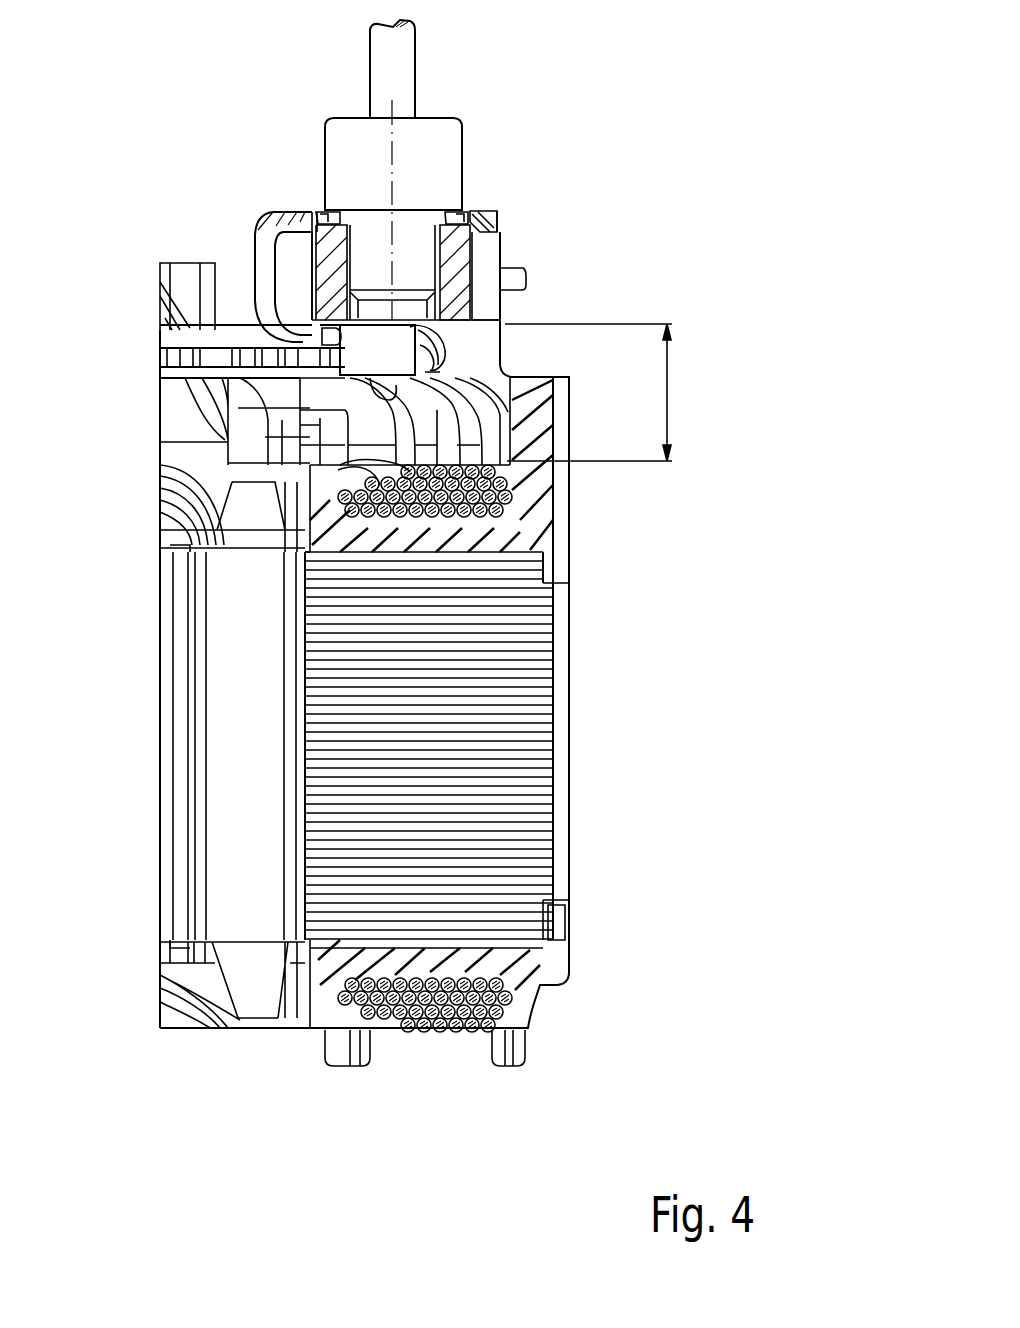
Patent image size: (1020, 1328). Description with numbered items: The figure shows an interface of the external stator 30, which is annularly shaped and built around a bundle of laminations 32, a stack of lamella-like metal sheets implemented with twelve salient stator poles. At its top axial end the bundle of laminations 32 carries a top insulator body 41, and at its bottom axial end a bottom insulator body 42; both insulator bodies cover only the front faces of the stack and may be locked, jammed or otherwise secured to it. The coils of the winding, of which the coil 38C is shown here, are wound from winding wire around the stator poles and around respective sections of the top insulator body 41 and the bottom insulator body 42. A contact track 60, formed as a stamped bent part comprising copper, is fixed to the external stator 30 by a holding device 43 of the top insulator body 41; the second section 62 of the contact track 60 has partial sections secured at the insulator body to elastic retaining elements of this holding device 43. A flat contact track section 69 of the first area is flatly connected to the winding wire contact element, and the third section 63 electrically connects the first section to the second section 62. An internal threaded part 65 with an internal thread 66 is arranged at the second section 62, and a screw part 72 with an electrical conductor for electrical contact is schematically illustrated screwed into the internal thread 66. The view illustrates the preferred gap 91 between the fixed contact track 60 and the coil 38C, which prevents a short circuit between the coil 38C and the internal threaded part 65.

The external stator 30 is at (280, 125).
The screw part 72 is at (442, 152).
The second section 62 is at (482, 212).
The contact track 60 is at (522, 216).
The internal threaded part 65 is at (462, 264).
The holding device 43 is at (524, 312).
The internal thread 66 is at (413, 350).
The gap 91 is at (669, 392).
The flat contact track section 69 is at (184, 375).
The third section 63 is at (229, 333).
The top insulator body 41 is at (540, 510).
The bundle of laminations 32 is at (505, 728).
The bottom insulator body 42 is at (540, 952).
The coil 38C is at (442, 1032).